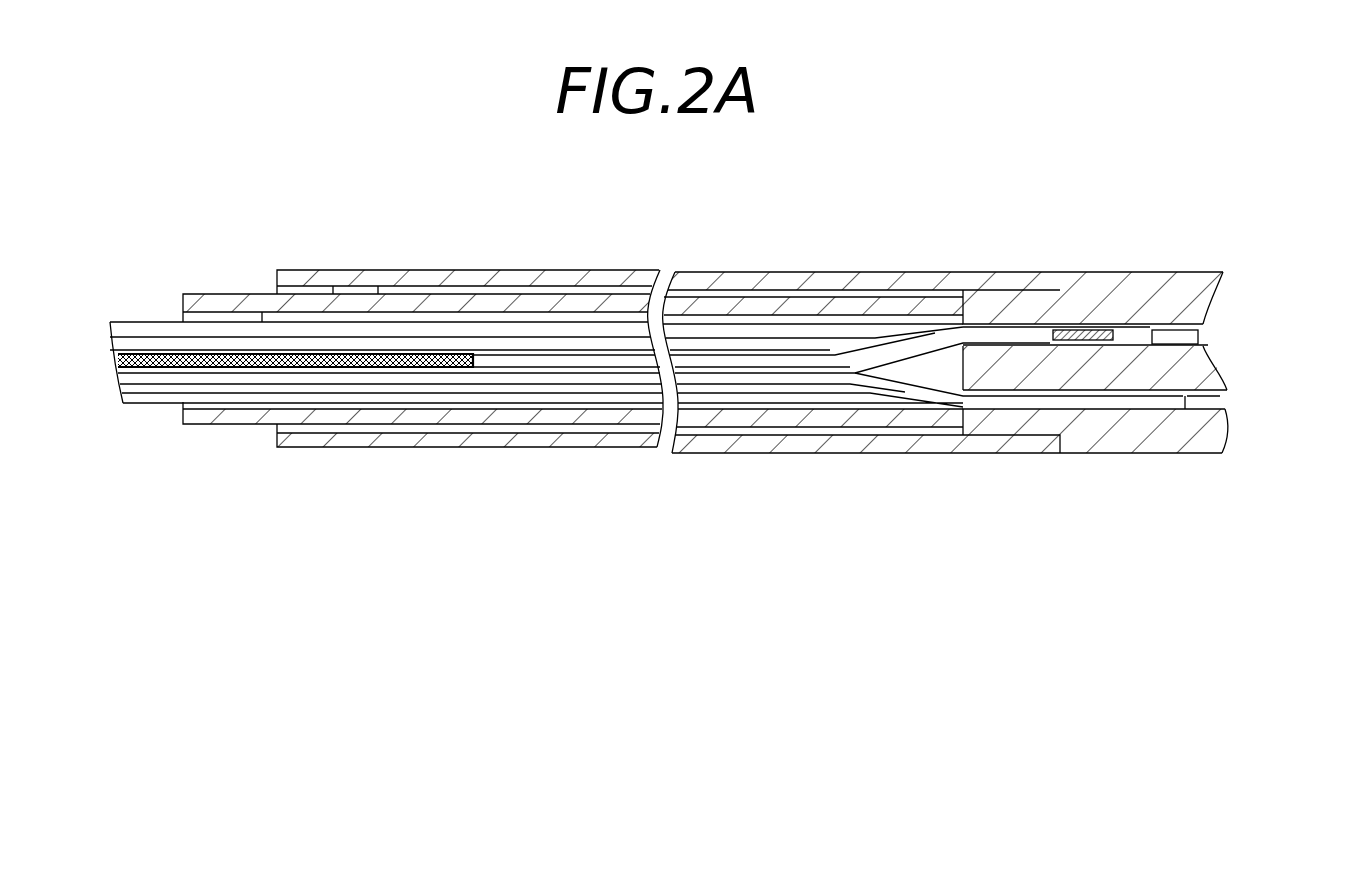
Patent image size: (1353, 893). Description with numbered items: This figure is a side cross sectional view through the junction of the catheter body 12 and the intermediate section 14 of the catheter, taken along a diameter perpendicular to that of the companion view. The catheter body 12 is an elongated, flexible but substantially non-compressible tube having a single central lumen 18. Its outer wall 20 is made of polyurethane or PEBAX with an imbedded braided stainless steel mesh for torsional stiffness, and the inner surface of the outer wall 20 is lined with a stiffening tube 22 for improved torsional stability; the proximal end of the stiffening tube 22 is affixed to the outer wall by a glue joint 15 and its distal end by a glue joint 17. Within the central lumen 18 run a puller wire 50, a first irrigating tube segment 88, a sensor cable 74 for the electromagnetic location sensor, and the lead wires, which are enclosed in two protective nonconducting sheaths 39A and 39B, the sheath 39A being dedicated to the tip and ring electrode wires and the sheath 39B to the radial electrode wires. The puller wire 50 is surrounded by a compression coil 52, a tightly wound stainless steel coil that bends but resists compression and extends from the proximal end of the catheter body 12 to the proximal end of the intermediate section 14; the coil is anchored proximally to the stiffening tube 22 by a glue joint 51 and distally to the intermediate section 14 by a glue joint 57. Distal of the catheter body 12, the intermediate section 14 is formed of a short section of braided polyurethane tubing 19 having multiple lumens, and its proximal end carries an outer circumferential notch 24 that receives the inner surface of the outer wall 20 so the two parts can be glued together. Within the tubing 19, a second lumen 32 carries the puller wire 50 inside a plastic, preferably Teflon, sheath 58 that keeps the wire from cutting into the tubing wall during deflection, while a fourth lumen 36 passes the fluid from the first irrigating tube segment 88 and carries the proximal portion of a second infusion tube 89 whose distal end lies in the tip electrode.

The catheter body 12 is at (880, 250).
The intermediate section 14 is at (1192, 250).
The glue joint 15 is at (345, 432).
The glue joint 17 is at (853, 432).
The central lumen 18 is at (578, 347).
The tubing 19 is at (1088, 300).
The outer wall 20 is at (755, 290).
The stiffening tube 22 is at (445, 304).
The outer circumferential notch 24 is at (1037, 425).
The second lumen 32 is at (1193, 333).
The fourth lumen 36 is at (1150, 409).
The sheath 39A is at (598, 398).
The sheath 39B is at (503, 392).
The puller wire 50 is at (1132, 322).
The glue joint 51 is at (230, 352).
The compression coil 52 is at (152, 352).
The glue joint 57 is at (1075, 328).
The sheath 58 is at (1212, 343).
The sensor cable 74 is at (540, 328).
The first irrigating tube segment 88 is at (227, 372).
The second infusion tube 89 is at (1222, 405).